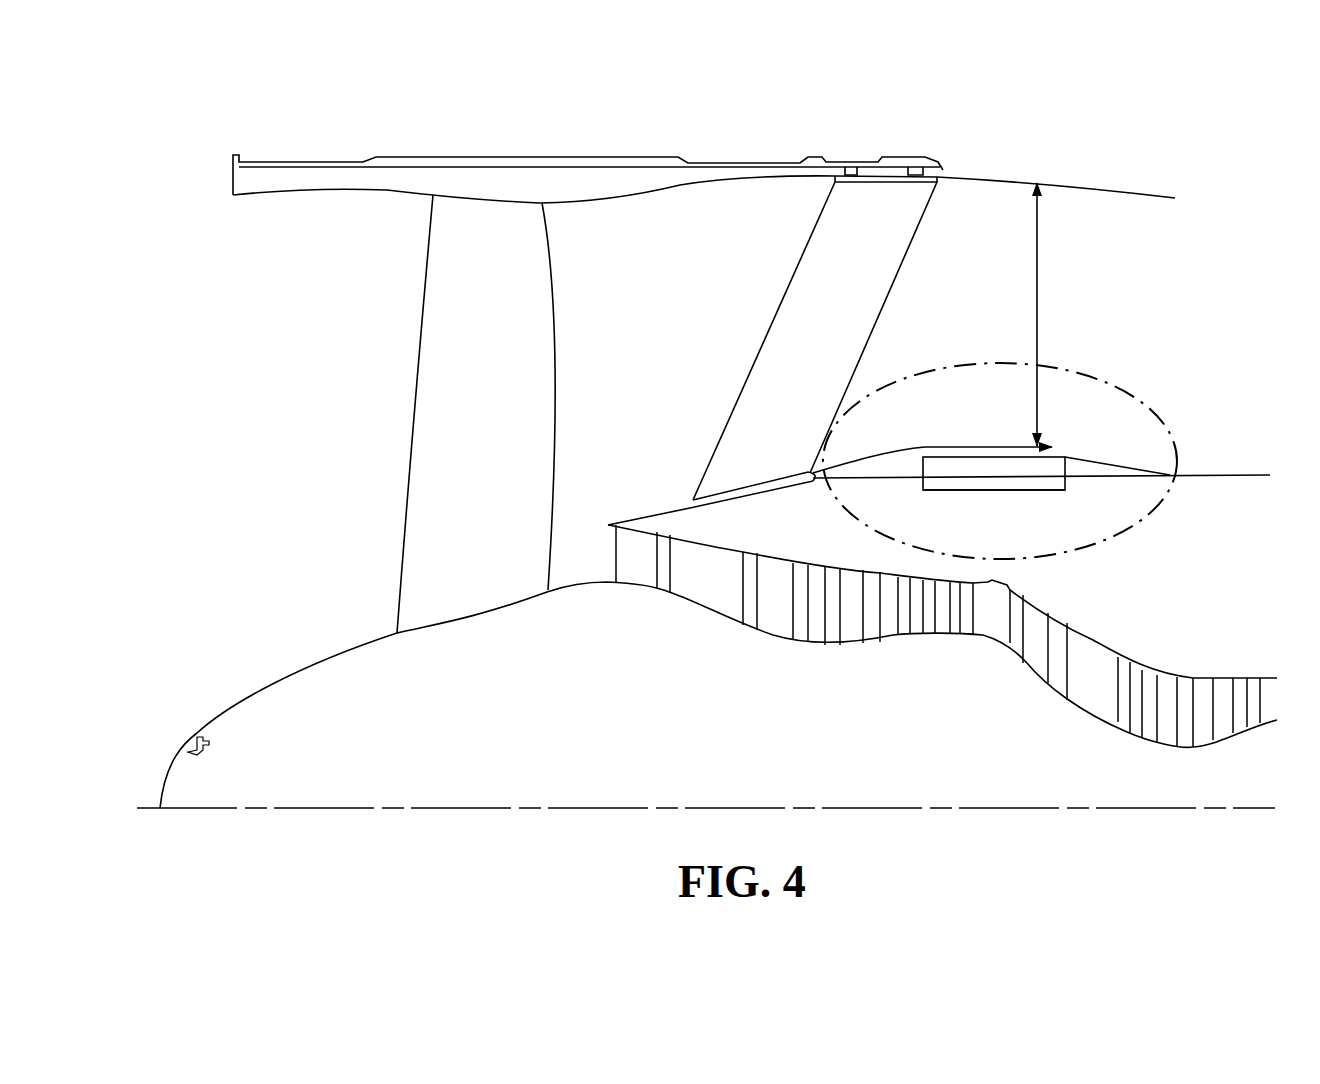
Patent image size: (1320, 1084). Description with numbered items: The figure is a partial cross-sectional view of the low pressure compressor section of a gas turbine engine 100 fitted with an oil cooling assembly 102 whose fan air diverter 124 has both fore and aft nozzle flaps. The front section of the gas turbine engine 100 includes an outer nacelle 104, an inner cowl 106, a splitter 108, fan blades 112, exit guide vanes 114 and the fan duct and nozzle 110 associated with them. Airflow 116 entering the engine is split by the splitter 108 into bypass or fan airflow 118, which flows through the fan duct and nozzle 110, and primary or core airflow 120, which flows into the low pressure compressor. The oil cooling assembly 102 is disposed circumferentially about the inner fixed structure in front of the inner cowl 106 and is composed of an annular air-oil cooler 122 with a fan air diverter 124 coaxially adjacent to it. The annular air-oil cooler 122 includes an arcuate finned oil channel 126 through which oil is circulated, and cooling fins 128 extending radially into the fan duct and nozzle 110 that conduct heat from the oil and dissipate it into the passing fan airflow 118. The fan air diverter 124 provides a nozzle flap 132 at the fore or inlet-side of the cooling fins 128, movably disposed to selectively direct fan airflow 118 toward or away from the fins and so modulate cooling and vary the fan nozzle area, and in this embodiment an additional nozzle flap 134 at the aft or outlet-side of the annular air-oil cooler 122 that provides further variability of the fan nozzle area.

The gas turbine engine 100 is at (252, 831).
The oil cooling assembly 102 is at (1147, 402).
The outer nacelle 104 is at (1040, 182).
The inner cowl 106 is at (1193, 470).
The splitter 108 is at (660, 511).
The fan duct and nozzle 110 is at (1037, 233).
The fan blades 112 is at (423, 296).
The exit guide vanes 114 is at (812, 241).
The airflow 116 is at (312, 486).
The fan airflow 118 is at (634, 377).
The core airflow 120 is at (699, 571).
The annular air-oil cooler 122 is at (1076, 489).
The fan air diverter 124 is at (876, 434).
The finned oil channel 126 is at (963, 485).
The cooling fins 128 is at (953, 470).
The nozzle flap 132 is at (882, 458).
The nozzle flap 134 is at (1085, 462).